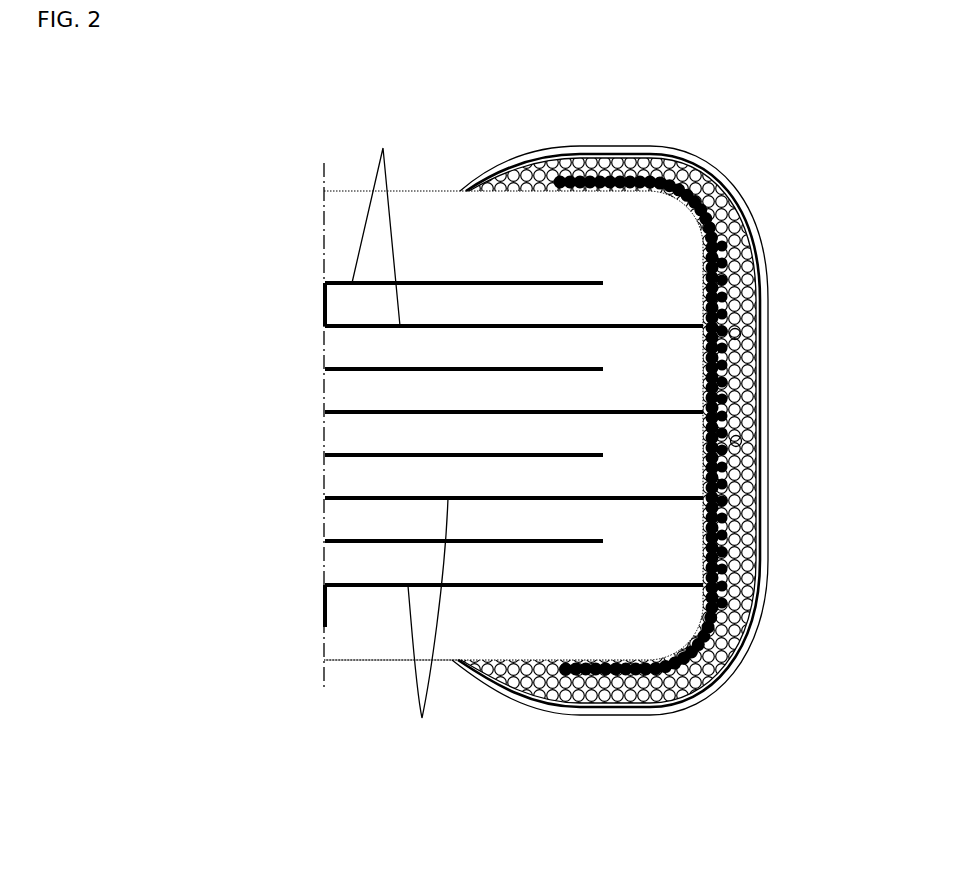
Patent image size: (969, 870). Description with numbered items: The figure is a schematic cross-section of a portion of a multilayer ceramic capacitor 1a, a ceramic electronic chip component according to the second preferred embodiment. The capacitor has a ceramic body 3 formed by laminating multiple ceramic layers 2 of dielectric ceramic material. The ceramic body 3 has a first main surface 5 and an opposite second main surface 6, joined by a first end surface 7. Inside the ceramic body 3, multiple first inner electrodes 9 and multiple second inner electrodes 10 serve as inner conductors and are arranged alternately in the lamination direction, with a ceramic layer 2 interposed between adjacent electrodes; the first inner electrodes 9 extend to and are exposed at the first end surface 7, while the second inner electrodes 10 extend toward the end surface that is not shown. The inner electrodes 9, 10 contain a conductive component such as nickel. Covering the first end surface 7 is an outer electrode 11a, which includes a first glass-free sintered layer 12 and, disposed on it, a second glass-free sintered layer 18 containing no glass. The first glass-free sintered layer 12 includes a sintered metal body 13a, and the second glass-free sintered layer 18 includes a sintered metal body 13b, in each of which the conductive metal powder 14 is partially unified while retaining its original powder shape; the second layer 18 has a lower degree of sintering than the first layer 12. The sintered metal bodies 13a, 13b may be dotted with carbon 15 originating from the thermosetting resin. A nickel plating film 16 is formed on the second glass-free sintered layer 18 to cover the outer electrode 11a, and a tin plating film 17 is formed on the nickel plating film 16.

The multilayer ceramic capacitor 1a is at (397, 84).
The ceramic layers 2 is at (335, 348).
The ceramic body 3 is at (322, 238).
The first main surface 5 is at (437, 191).
The second main surface 6 is at (364, 662).
The first end surface 7 is at (728, 546).
The first inner electrodes 9 is at (428, 622).
The second inner electrodes 10 is at (376, 224).
The outer electrode 11a is at (733, 191).
The first glass-free sintered layer 12 is at (730, 305).
The sintered metal body 13a is at (727, 371).
The sintered metal body 13b is at (752, 399).
The conductive metal powder 14 is at (752, 506).
The carbon 15 is at (738, 334).
The nickel plating film 16 is at (733, 642).
The tin plating film 17 is at (702, 688).
The second glass-free sintered layer 18 is at (748, 266).